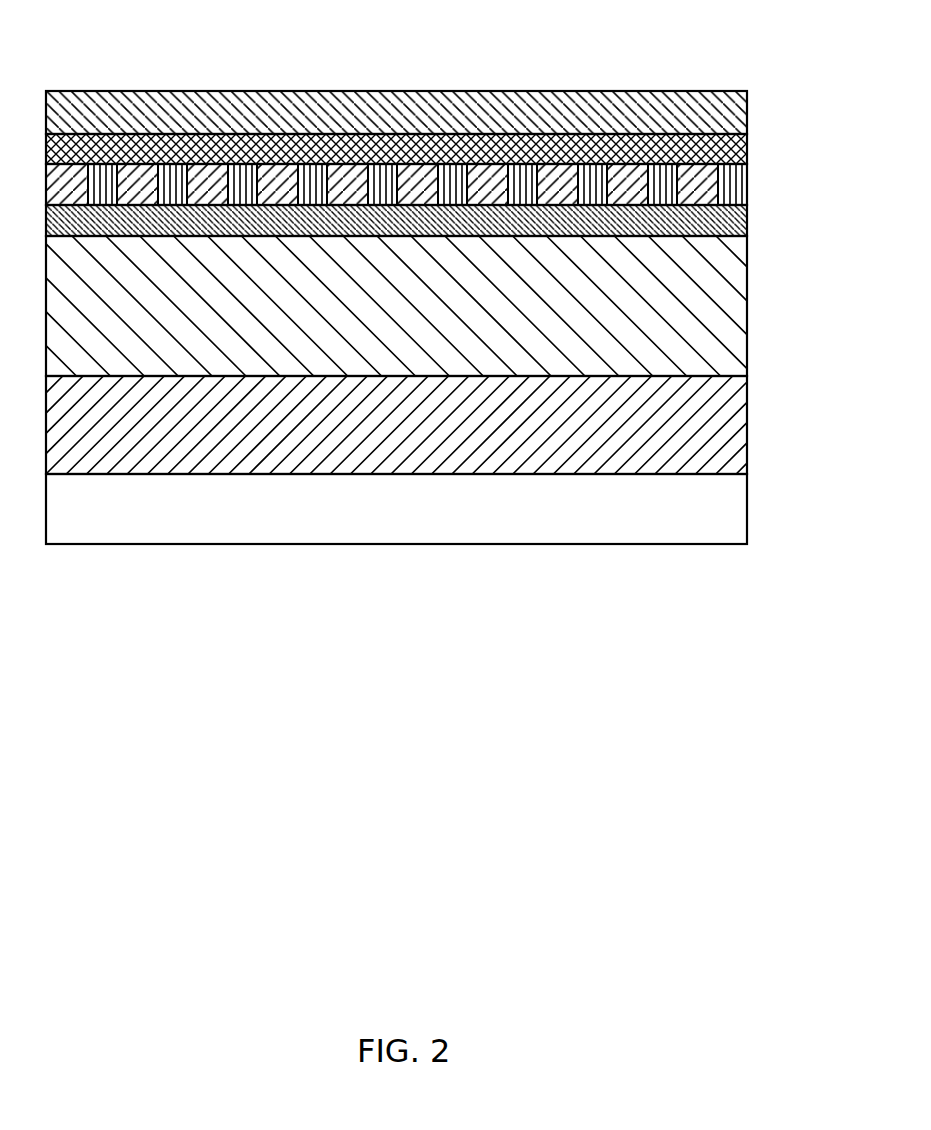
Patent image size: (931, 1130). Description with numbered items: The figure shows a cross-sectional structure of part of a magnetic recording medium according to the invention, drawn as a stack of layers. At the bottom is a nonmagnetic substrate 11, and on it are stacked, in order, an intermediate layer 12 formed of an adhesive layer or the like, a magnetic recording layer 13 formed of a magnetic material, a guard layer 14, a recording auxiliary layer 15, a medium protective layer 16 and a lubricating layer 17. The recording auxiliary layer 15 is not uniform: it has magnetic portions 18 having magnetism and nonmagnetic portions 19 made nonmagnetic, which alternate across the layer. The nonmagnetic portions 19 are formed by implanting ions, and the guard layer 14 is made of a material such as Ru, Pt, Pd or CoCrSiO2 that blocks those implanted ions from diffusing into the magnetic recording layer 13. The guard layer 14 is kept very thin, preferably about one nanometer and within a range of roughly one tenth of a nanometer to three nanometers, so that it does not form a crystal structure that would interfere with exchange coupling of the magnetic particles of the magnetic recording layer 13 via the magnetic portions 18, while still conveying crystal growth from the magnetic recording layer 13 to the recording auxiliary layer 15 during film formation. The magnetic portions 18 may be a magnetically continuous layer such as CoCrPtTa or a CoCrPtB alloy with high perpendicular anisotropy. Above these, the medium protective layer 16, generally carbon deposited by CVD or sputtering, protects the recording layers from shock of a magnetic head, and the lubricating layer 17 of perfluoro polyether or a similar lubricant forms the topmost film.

The nonmagnetic substrate 11 is at (736, 508).
The intermediate layer 12 is at (736, 422).
The magnetic recording layer 13 is at (736, 312).
The guard layer 14 is at (746, 223).
The recording auxiliary layer 15 is at (442, 116).
The medium protective layer 16 is at (745, 147).
The lubricating layer 17 is at (740, 109).
The magnetic portions 18 is at (138, 175).
The nonmagnetic portions 19 is at (172, 173).